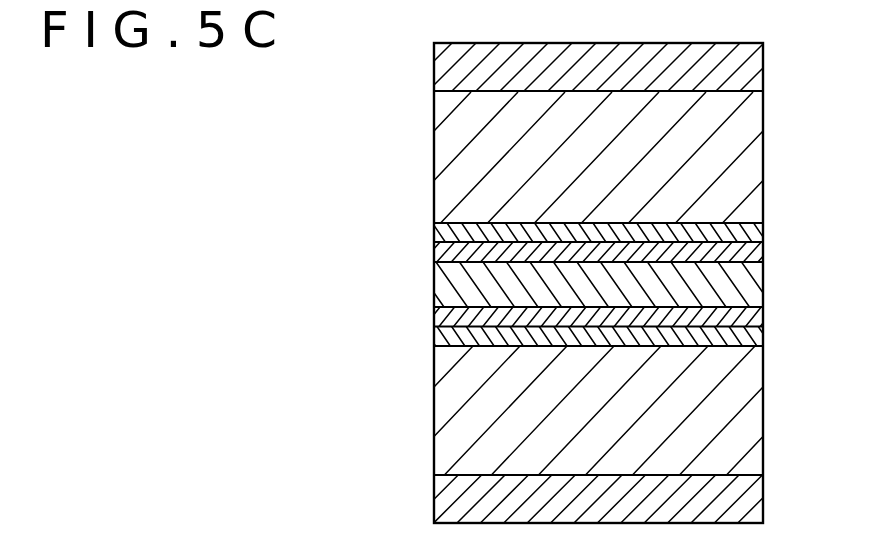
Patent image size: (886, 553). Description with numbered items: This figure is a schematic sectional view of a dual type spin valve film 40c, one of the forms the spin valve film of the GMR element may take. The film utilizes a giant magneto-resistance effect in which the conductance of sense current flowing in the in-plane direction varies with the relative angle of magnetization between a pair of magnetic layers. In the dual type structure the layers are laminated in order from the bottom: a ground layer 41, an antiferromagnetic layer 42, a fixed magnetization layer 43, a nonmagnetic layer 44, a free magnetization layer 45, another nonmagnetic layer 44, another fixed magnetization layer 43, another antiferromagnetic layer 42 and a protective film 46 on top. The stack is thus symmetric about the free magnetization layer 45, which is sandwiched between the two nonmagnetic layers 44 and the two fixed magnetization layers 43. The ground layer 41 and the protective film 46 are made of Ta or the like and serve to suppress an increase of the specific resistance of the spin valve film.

The dual type spin valve film 40c is at (380, 218).
The ground layer 41 is at (747, 503).
The antiferromagnetic layer 42 is at (747, 161).
The fixed magnetization layer 43 is at (752, 231).
The nonmagnetic layer 44 is at (752, 253).
The free magnetization layer 45 is at (747, 283).
The protective film 46 is at (748, 68).